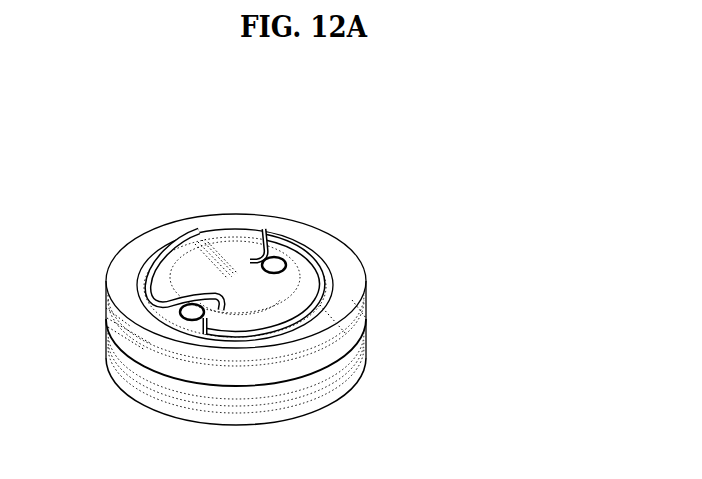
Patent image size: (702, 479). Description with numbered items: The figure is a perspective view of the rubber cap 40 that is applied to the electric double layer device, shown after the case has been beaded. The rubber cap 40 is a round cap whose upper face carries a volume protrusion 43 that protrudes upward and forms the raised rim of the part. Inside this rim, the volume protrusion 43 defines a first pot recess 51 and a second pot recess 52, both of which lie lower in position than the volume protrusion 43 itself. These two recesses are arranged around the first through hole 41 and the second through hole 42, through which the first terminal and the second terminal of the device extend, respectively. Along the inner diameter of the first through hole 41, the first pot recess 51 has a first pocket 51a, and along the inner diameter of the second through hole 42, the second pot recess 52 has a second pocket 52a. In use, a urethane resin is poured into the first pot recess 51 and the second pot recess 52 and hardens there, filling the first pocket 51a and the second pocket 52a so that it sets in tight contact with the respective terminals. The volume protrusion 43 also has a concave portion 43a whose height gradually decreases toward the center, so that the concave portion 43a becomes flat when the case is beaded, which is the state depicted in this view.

The rubber cap 40 is at (406, 301).
The first through hole 41 is at (270, 243).
The second through hole 42 is at (150, 306).
The volume protrusion 43 is at (352, 354).
The concave portion 43a is at (245, 305).
The first pot recess 51 is at (307, 247).
The first pocket 51a is at (288, 258).
The second pot recess 52 is at (178, 347).
The second pocket 52a is at (152, 292).